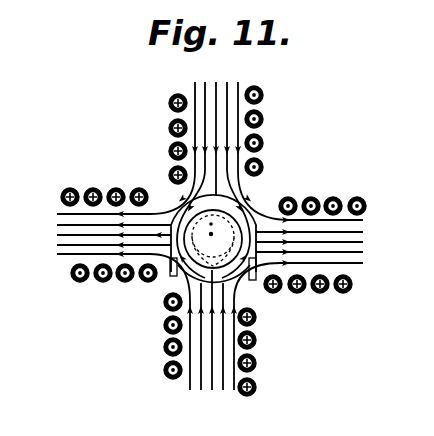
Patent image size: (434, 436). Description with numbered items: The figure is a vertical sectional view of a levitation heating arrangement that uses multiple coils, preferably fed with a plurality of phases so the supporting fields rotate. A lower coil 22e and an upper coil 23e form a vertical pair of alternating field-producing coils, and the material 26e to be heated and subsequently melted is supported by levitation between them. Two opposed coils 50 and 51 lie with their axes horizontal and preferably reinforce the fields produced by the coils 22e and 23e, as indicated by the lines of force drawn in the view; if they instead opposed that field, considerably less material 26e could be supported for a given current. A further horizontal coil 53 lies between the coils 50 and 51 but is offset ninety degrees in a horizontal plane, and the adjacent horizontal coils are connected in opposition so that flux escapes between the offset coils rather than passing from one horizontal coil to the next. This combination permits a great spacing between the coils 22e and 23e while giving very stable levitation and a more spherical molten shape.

The lower coil 22e is at (239, 392).
The upper coil 23e is at (249, 87).
The material 26e is at (246, 199).
The horizontal coil 50 is at (69, 204).
The horizontal coil 51 is at (364, 212).
The offset horizontal coil 53 is at (182, 208).